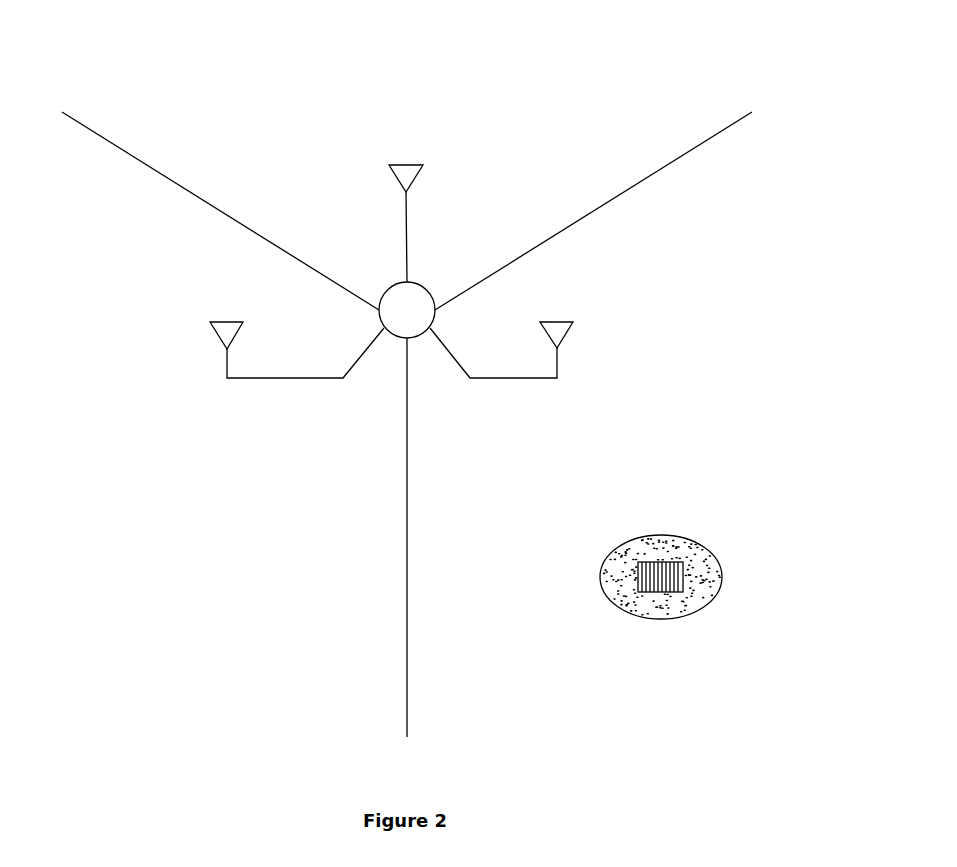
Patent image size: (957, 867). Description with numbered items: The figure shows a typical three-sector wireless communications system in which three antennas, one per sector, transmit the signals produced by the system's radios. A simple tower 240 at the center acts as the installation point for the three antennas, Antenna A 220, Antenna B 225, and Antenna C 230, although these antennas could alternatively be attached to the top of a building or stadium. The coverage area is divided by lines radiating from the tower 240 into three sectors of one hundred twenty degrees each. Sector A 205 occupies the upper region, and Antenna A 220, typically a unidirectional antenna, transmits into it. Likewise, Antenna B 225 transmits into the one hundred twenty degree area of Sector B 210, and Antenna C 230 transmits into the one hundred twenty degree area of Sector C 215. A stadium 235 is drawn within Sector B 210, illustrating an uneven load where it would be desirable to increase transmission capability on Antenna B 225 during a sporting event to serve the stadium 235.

The Sector A 205 is at (285, 81).
The Sector B 210 is at (608, 446).
The Sector C 215 is at (155, 440).
The Antenna A 220 is at (407, 167).
The Antenna B 225 is at (558, 320).
The Antenna C 230 is at (225, 320).
The stadium 235 is at (692, 610).
The tower 240 is at (427, 289).